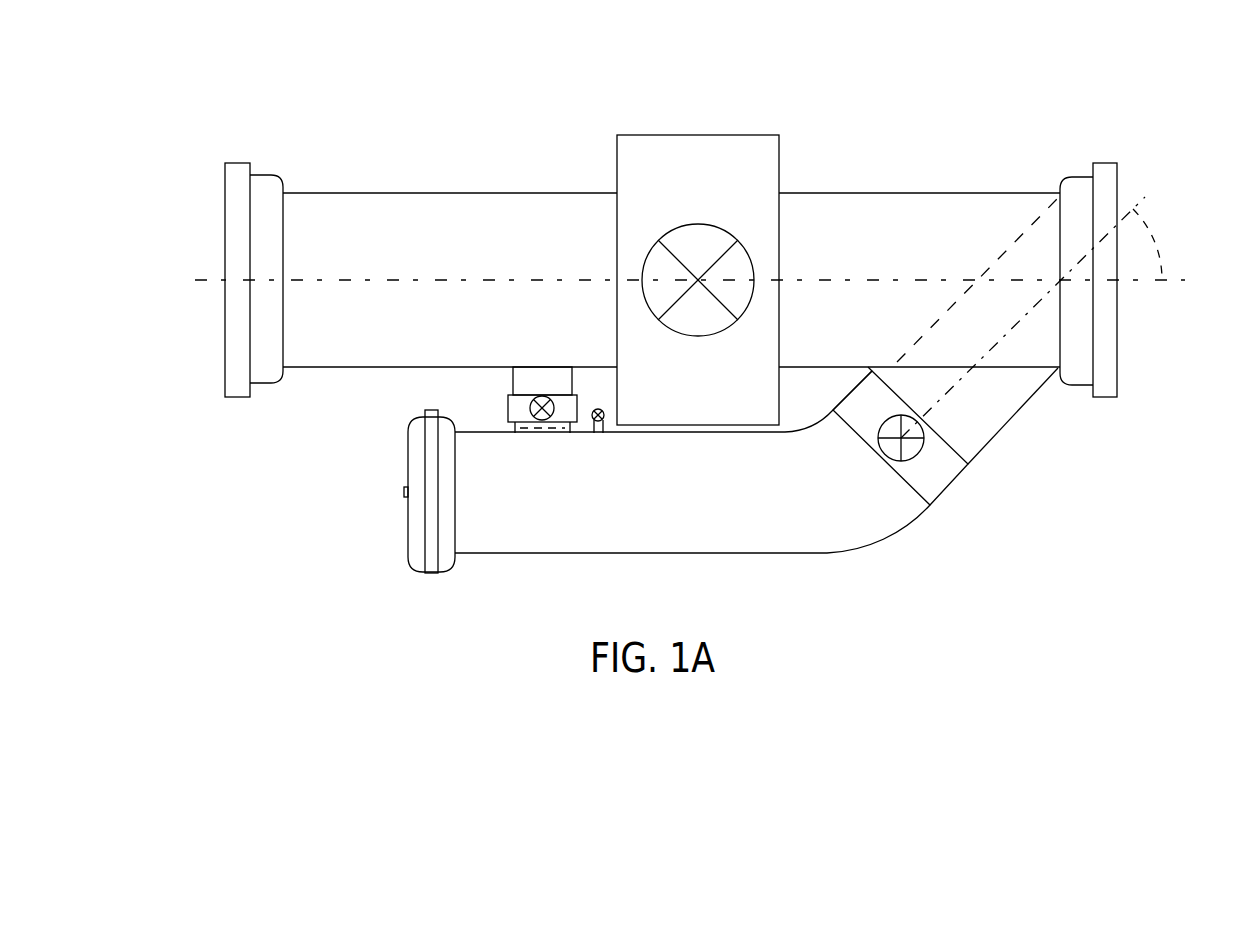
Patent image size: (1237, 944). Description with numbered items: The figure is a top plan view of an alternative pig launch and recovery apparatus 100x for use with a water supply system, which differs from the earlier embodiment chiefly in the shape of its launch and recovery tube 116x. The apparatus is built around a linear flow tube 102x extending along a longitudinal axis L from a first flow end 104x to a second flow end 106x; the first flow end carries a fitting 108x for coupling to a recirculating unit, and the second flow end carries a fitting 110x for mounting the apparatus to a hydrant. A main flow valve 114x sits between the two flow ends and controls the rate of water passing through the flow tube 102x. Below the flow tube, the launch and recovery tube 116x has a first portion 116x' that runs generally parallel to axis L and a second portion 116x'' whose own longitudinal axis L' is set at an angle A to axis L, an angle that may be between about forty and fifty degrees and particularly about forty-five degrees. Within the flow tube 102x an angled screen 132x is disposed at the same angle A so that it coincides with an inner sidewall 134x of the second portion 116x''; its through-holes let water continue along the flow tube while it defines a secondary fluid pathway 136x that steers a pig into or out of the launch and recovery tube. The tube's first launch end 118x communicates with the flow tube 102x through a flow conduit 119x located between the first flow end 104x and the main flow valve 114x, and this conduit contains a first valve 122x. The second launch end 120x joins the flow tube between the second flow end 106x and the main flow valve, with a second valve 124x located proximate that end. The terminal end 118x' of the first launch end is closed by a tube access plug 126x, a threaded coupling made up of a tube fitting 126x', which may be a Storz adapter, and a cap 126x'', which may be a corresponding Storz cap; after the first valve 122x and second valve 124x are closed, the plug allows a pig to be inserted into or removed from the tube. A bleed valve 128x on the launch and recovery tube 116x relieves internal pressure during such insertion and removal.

The pig launch and recovery apparatus 100x is at (671, 205).
The flow tube 102x is at (908, 193).
The first flow end 104x is at (275, 176).
The second flow end 106x is at (1073, 177).
The fitting 108x is at (242, 163).
The fitting 110x is at (1122, 166).
The main flow valve 114x is at (780, 159).
The launch and recovery tube 116x is at (857, 512).
The first portion 116x' is at (641, 513).
The second portion 116x'' is at (963, 426).
The first launch end 118x is at (517, 427).
The terminal end 118x' is at (485, 574).
The flow conduit 119x is at (513, 376).
The second launch end 120x is at (1033, 398).
The first valve 122x is at (541, 421).
The second valve 124x is at (947, 500).
The tube access plug 126x is at (413, 517).
The tube fitting 126x' is at (441, 518).
The cap 126x'' is at (387, 541).
The bleed valve 128x is at (603, 421).
The angled screen 132x is at (1006, 252).
The inner sidewall 134x is at (884, 372).
The secondary fluid pathway 136x is at (1009, 409).
The longitudinal axis L is at (710, 296).
The longitudinal axis L' is at (1049, 289).
The angle A is at (1160, 243).